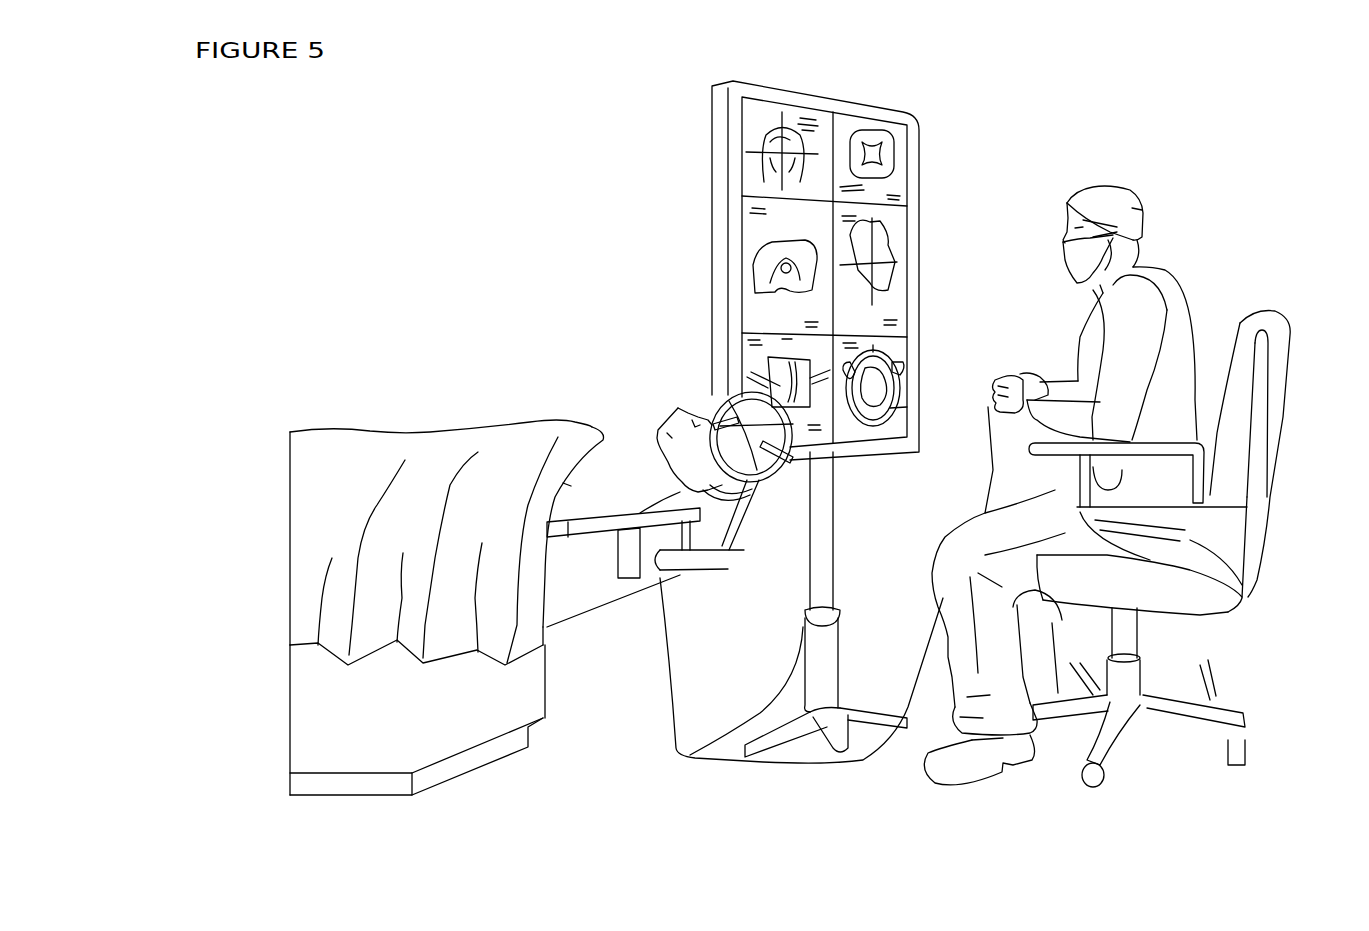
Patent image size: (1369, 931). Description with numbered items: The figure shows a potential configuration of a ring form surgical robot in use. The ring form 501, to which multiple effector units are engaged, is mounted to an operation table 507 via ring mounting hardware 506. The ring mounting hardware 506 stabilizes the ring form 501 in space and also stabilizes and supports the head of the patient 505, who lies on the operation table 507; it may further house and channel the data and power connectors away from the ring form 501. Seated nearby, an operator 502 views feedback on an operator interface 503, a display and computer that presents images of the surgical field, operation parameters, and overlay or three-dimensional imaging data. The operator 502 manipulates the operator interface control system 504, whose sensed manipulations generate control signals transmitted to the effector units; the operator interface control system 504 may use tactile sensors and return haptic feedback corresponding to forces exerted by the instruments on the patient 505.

The ring form 501 is at (716, 396).
The operator 502 is at (1142, 203).
The operator interface 503 is at (913, 178).
The operator interface control system 504 is at (1005, 373).
The patient 505 is at (430, 440).
The ring mounting hardware 506 is at (746, 570).
The operation table 507 is at (600, 533).